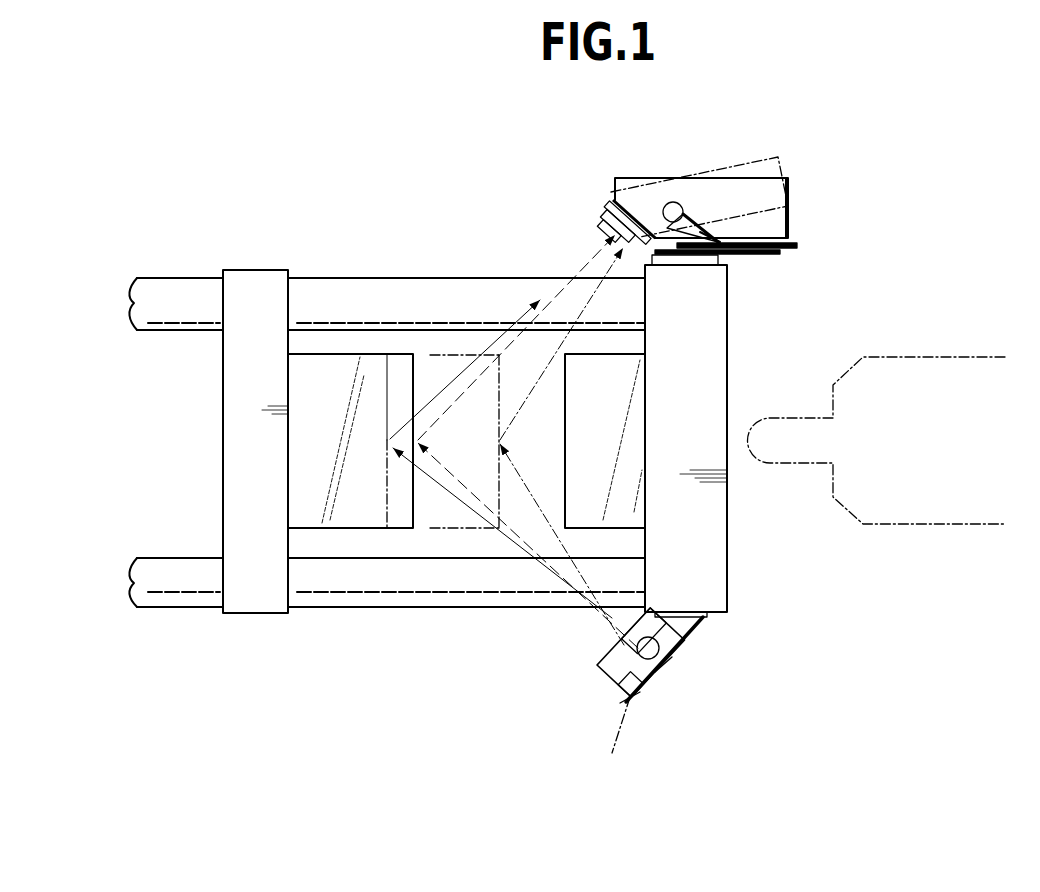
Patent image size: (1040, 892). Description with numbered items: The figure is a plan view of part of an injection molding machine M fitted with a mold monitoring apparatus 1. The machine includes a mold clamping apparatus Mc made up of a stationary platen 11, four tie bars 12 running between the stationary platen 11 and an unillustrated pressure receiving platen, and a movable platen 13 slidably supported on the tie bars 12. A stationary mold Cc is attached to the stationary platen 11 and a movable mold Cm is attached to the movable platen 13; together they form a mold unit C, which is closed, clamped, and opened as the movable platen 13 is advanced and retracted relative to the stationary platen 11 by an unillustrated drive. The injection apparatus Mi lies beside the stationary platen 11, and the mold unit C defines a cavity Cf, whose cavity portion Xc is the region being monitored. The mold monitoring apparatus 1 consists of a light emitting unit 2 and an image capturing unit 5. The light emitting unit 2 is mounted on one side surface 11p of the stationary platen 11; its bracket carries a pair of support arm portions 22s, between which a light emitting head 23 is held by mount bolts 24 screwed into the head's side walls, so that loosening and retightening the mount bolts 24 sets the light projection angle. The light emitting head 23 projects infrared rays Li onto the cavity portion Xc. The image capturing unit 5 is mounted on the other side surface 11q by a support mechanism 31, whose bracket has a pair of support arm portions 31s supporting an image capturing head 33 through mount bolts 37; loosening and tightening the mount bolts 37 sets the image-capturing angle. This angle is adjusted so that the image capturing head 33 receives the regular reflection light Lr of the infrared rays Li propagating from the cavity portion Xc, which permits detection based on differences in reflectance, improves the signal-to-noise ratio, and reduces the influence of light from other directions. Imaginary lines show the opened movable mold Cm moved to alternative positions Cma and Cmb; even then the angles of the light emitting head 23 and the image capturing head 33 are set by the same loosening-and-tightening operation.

The mold monitoring apparatus 1 is at (745, 737).
The light emitting unit 2 is at (632, 711).
The image capturing unit 5 is at (808, 195).
The stationary platen 11 is at (727, 512).
The side surface 11p is at (720, 612).
The side surface 11q is at (728, 258).
The tie bars 12 is at (323, 278).
The movable platen 13 is at (223, 462).
The support arm portions 22s is at (697, 628).
The light emitting head 23 is at (620, 703).
The mount bolts 24 is at (663, 663).
The support mechanism 31 is at (800, 247).
The support arm portions 31s is at (713, 228).
The image capturing head 33 is at (758, 155).
The mount bolts 37 is at (645, 212).
The mold unit C is at (375, 542).
The stationary mold Cc is at (630, 527).
The cavity Cf is at (413, 480).
The movable mold Cm is at (410, 352).
The position Cma is at (450, 353).
The position Cmb is at (393, 512).
The infrared rays Li is at (593, 623).
The regular reflection light Lr is at (588, 262).
The injection molding machine M is at (940, 218).
The mold clamping apparatus Mc is at (248, 218).
The injection apparatus Mi is at (935, 340).
The cavity portion Xc is at (472, 436).